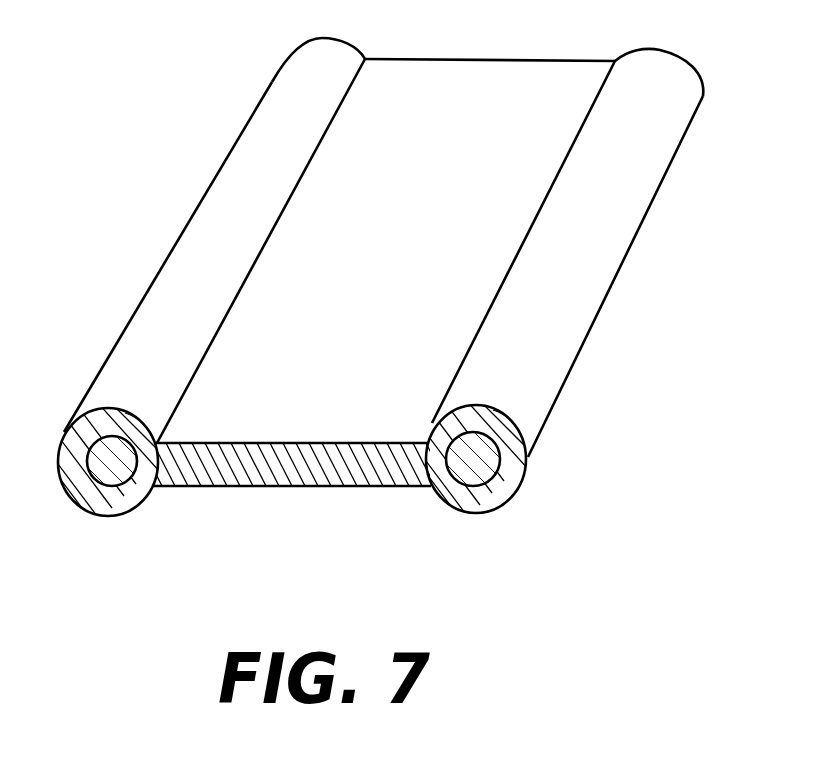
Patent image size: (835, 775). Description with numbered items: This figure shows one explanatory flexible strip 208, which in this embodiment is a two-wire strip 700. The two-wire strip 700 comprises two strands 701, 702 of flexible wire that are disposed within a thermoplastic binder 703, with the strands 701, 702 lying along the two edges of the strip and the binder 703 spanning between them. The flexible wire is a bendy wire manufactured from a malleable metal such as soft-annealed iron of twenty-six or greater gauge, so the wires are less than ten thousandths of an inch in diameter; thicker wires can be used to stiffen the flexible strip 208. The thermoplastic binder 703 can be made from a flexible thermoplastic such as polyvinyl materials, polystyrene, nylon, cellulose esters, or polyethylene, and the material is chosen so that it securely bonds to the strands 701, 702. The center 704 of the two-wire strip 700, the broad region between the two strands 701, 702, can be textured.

The flexible strip 208 is at (99, 221).
The two-wire strip 700 is at (660, 195).
The strand of flexible wire 701 is at (110, 463).
The strand of flexible wire 702 is at (476, 462).
The thermoplastic binder 703 is at (276, 460).
The center of the two-wire strip 704 is at (452, 186).